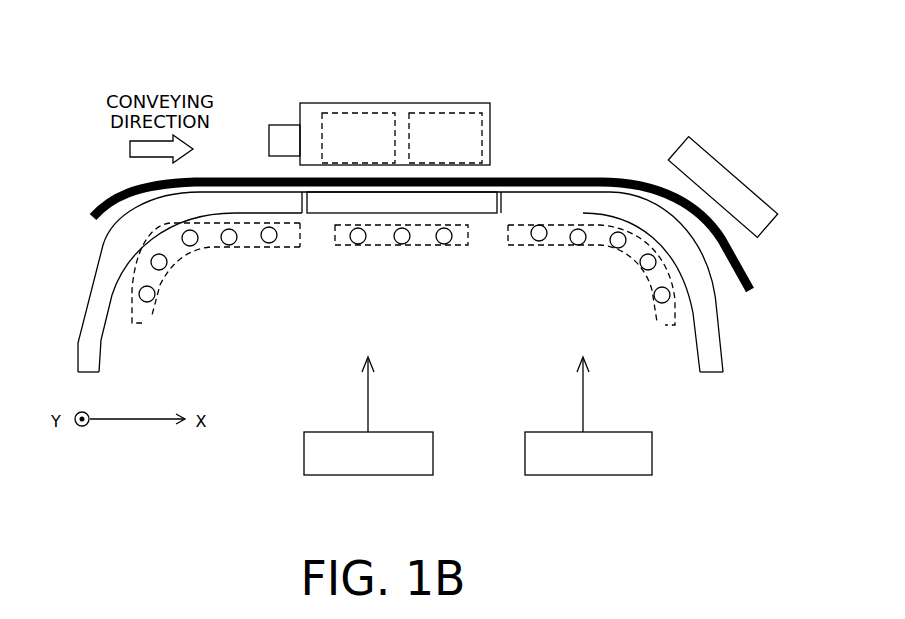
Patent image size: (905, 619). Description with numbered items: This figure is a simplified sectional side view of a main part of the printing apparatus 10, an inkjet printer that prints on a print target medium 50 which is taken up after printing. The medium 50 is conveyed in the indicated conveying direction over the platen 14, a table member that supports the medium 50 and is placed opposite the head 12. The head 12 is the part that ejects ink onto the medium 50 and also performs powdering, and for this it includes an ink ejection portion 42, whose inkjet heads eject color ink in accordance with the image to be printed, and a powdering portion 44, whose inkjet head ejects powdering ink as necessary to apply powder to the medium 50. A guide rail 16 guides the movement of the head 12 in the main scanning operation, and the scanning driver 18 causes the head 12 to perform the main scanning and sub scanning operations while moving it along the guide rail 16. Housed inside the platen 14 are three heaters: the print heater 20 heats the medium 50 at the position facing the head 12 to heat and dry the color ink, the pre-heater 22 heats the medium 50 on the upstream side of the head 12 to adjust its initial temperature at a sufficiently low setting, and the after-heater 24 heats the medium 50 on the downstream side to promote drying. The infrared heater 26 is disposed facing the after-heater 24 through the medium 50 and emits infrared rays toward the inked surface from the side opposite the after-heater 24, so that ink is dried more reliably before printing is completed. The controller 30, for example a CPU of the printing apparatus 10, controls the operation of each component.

The printing apparatus 10 is at (87, 112).
The head 12 is at (490, 127).
The platen 14 is at (483, 208).
The guide rail 16 is at (278, 125).
The scanning driver 18 is at (652, 462).
The print heater 20 is at (347, 247).
The pre-heater 22 is at (150, 318).
The after-heater 24 is at (660, 330).
The infrared heater 26 is at (709, 152).
The controller 30 is at (304, 457).
The ink ejection portion 42 is at (350, 113).
The powdering portion 44 is at (448, 113).
The print target medium 50 is at (240, 177).